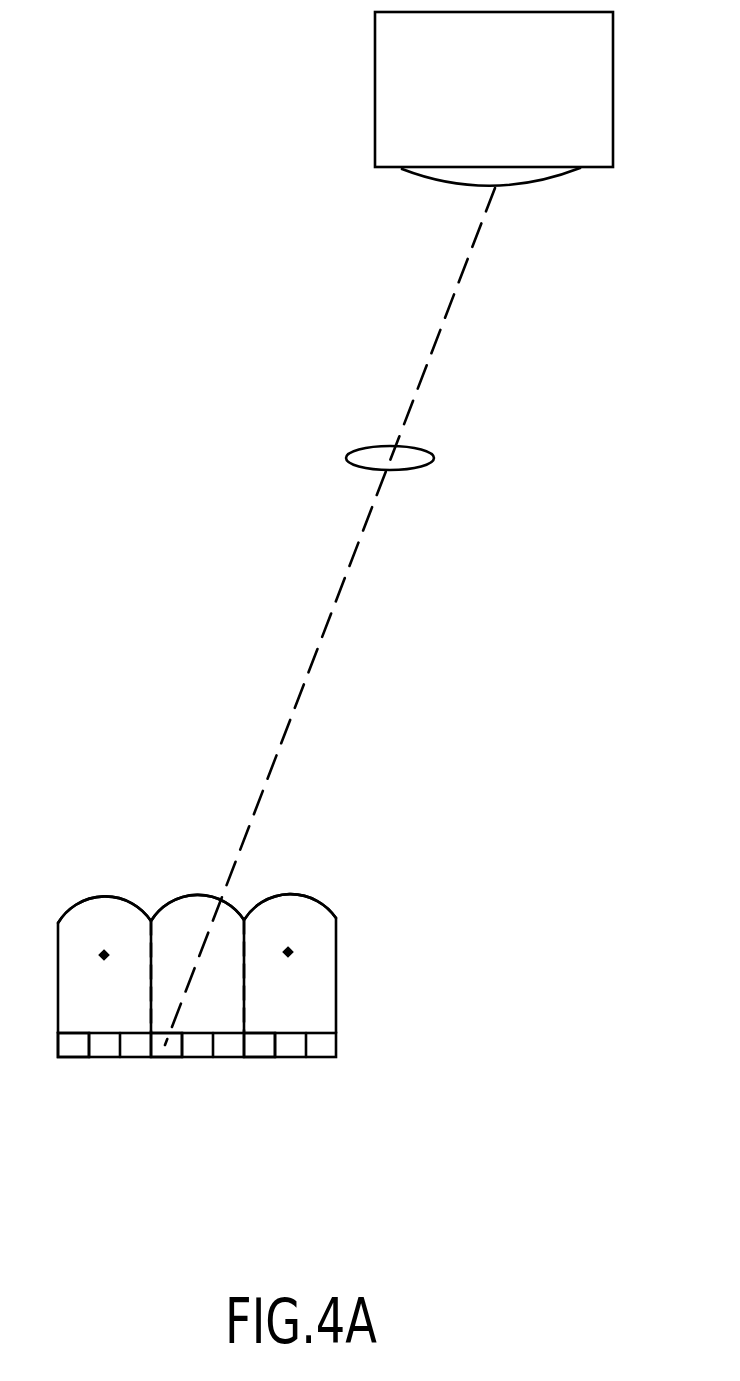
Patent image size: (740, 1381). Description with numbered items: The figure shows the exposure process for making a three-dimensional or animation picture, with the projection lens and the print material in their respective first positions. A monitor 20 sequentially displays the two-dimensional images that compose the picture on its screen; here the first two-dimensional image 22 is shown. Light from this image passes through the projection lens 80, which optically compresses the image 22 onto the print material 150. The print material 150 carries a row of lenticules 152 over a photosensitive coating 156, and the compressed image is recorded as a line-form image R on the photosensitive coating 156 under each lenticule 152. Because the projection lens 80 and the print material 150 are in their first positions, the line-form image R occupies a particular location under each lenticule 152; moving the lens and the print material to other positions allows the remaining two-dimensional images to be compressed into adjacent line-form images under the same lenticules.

The monitor 20 is at (600, 60).
The 2D image 22 is at (545, 180).
The projection lens 80 is at (407, 470).
The print material 150 is at (343, 968).
The lenticule 152 is at (335, 856).
The photosensitive coating 156 is at (328, 1043).
The line-form image R is at (77, 1050).